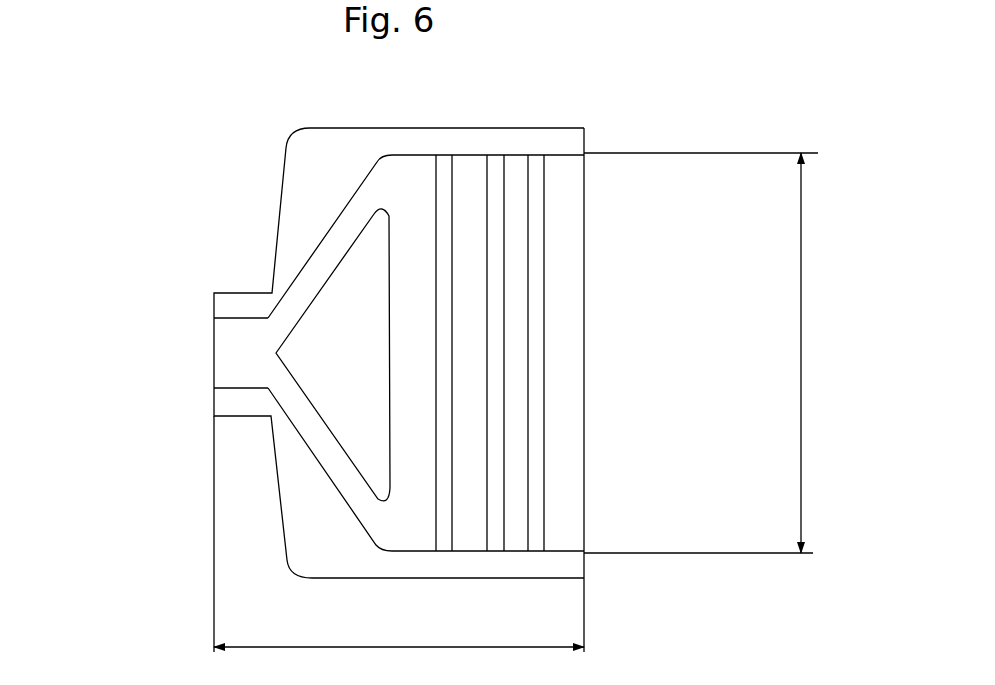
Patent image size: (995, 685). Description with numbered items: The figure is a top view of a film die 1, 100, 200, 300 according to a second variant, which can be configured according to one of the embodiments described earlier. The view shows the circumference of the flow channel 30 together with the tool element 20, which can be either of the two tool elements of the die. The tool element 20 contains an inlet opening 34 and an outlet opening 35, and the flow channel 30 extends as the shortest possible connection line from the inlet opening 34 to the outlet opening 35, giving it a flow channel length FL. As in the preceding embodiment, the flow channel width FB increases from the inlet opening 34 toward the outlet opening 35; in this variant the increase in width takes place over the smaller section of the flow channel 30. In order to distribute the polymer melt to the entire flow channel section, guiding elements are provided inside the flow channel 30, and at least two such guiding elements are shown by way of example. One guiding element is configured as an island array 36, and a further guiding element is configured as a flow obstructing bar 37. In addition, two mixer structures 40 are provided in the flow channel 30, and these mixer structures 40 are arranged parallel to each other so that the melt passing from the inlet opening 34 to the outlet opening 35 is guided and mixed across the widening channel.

The film die 1 is at (618, 115).
The flow element (first variant) 100 is at (446, 347).
The flow element (second variant) 200 is at (446, 347).
The flow element (third variant) 300 is at (446, 357).
The second tool element 20 is at (310, 170).
The flow channel 30 is at (318, 268).
The inlet opening 34 is at (213, 340).
The outlet opening 35 is at (586, 338).
The island array 36 is at (352, 276).
The flow obstructing bar 37 is at (455, 490).
The mixer structures 40 is at (535, 279).